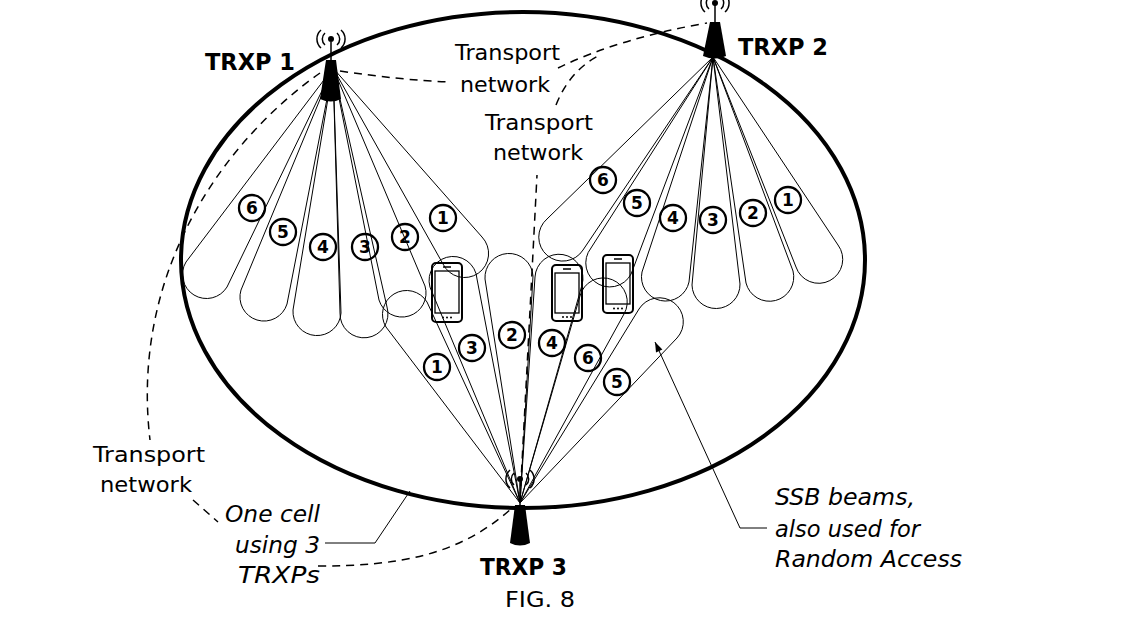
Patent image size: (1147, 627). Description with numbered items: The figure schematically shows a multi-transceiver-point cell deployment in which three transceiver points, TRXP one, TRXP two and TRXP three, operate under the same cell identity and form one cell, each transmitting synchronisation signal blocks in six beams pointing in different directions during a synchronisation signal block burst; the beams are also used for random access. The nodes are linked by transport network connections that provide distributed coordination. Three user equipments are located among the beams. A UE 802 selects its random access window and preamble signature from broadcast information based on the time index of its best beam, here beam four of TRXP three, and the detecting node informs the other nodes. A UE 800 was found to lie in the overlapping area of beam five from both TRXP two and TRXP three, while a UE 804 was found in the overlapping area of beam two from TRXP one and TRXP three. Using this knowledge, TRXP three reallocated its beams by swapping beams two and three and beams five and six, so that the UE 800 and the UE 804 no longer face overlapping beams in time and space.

The UE 800 is at (618, 285).
The UE 802 is at (566, 292).
The UE 804 is at (448, 292).